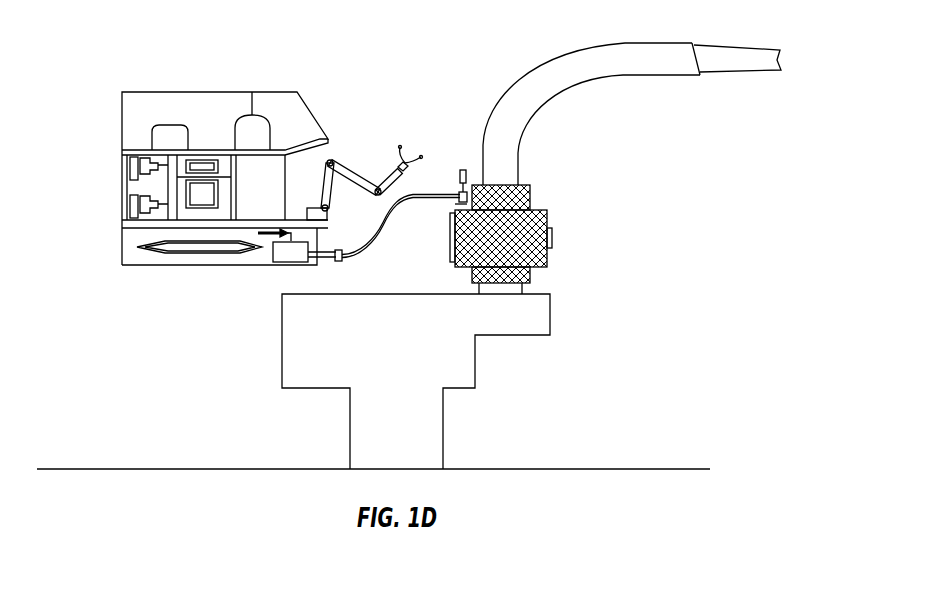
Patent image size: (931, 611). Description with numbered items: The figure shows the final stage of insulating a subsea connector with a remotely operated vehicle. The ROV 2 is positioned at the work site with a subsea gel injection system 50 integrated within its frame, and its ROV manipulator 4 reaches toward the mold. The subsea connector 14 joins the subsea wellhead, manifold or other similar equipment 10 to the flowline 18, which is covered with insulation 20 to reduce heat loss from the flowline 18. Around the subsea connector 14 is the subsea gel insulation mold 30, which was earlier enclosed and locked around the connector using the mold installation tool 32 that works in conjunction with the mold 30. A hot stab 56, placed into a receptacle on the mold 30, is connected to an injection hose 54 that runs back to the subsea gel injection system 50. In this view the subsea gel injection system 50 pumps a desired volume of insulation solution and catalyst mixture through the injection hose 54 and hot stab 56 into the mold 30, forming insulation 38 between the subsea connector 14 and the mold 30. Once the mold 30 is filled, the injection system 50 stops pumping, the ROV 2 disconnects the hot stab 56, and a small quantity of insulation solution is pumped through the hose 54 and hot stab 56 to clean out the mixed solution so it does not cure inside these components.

The remotely operated vehicle (ROV) 2 is at (136, 91).
The ROV manipulator 4 is at (353, 178).
The subsea wellhead, manifold or other similar equipment 10 is at (477, 362).
The subsea connector 14 is at (553, 232).
The flowline 18 is at (765, 43).
The insulation 20 is at (670, 42).
The subsea gel insulation mold 30 is at (541, 180).
The mold installation tool 32 is at (550, 218).
The insulation 38 is at (542, 257).
The subsea gel injection system 50 is at (134, 266).
The injection hose 54 is at (377, 243).
The hot stab 56 is at (462, 168).